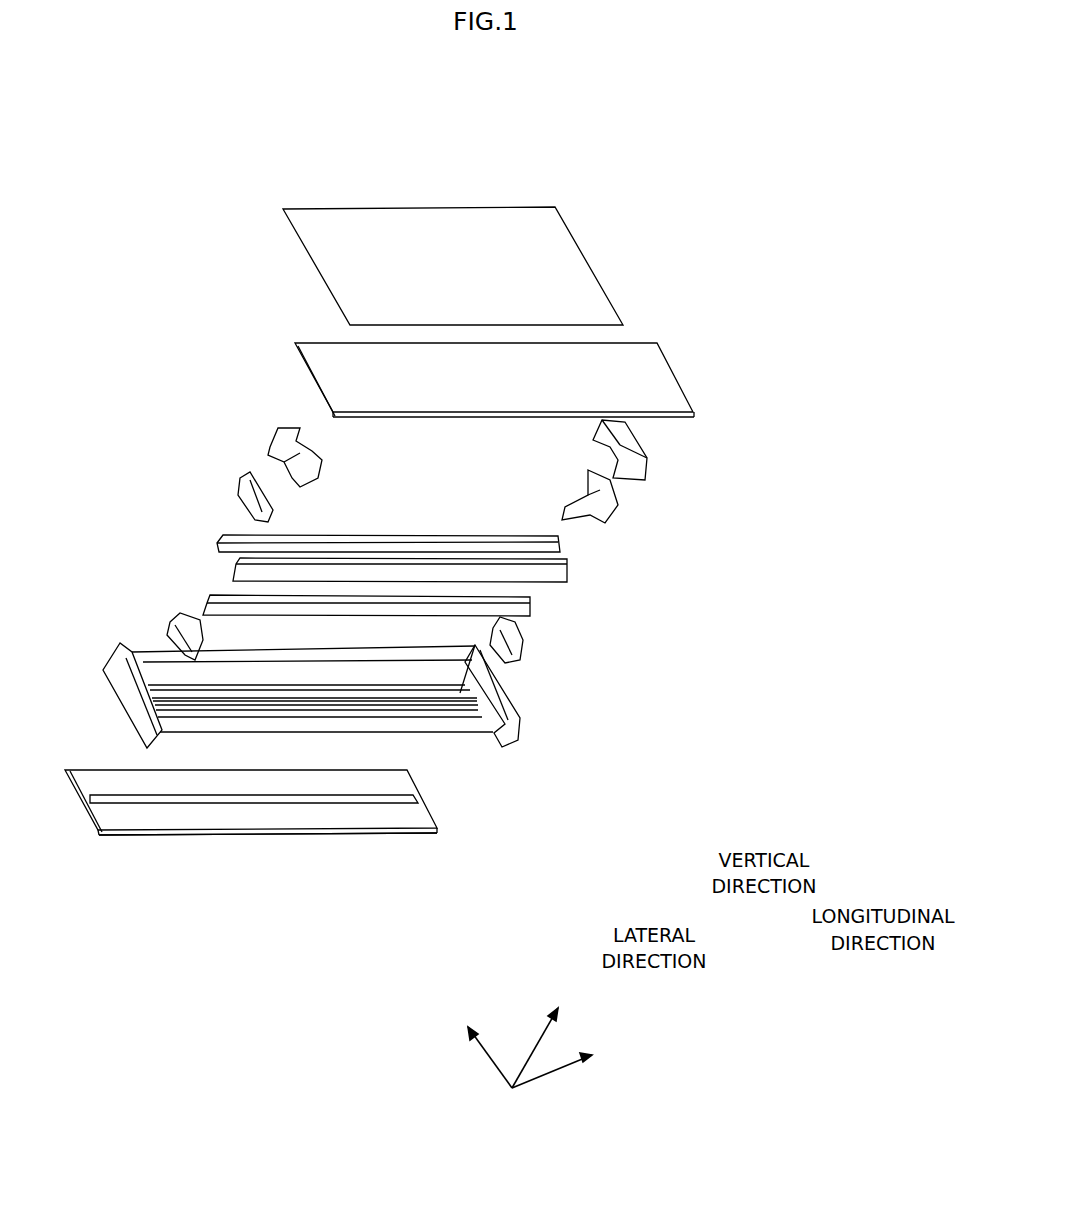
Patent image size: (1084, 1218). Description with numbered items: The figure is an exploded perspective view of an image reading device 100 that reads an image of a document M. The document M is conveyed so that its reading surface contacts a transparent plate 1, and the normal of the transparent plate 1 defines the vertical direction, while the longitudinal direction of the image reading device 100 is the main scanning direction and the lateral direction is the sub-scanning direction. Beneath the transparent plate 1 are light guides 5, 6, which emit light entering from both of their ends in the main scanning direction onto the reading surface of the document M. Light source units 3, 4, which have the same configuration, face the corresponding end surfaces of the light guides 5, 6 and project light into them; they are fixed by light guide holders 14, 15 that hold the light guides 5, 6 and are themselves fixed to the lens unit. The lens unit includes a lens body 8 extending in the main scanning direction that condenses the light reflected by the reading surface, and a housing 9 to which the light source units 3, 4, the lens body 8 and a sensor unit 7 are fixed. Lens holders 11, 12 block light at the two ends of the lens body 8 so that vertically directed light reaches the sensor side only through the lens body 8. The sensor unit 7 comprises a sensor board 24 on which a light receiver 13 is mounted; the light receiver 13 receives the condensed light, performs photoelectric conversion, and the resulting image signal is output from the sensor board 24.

The image reading device 100 is at (349, 141).
The document M is at (558, 298).
The transparent plate 1 is at (692, 410).
The light guide holder 15 is at (290, 428).
The light source unit 4 is at (226, 475).
The light guide holder 14 is at (637, 470).
The light source unit 3 is at (630, 522).
The light guide 6 is at (223, 537).
The light guide 5 is at (565, 570).
The lens body 8 is at (530, 603).
The lens holder 12 is at (178, 620).
The lens holder 11 is at (518, 642).
The housing 9 is at (505, 730).
The sensor unit 7 is at (462, 833).
The light receiver 13 is at (118, 797).
The sensor board 24 is at (307, 820).